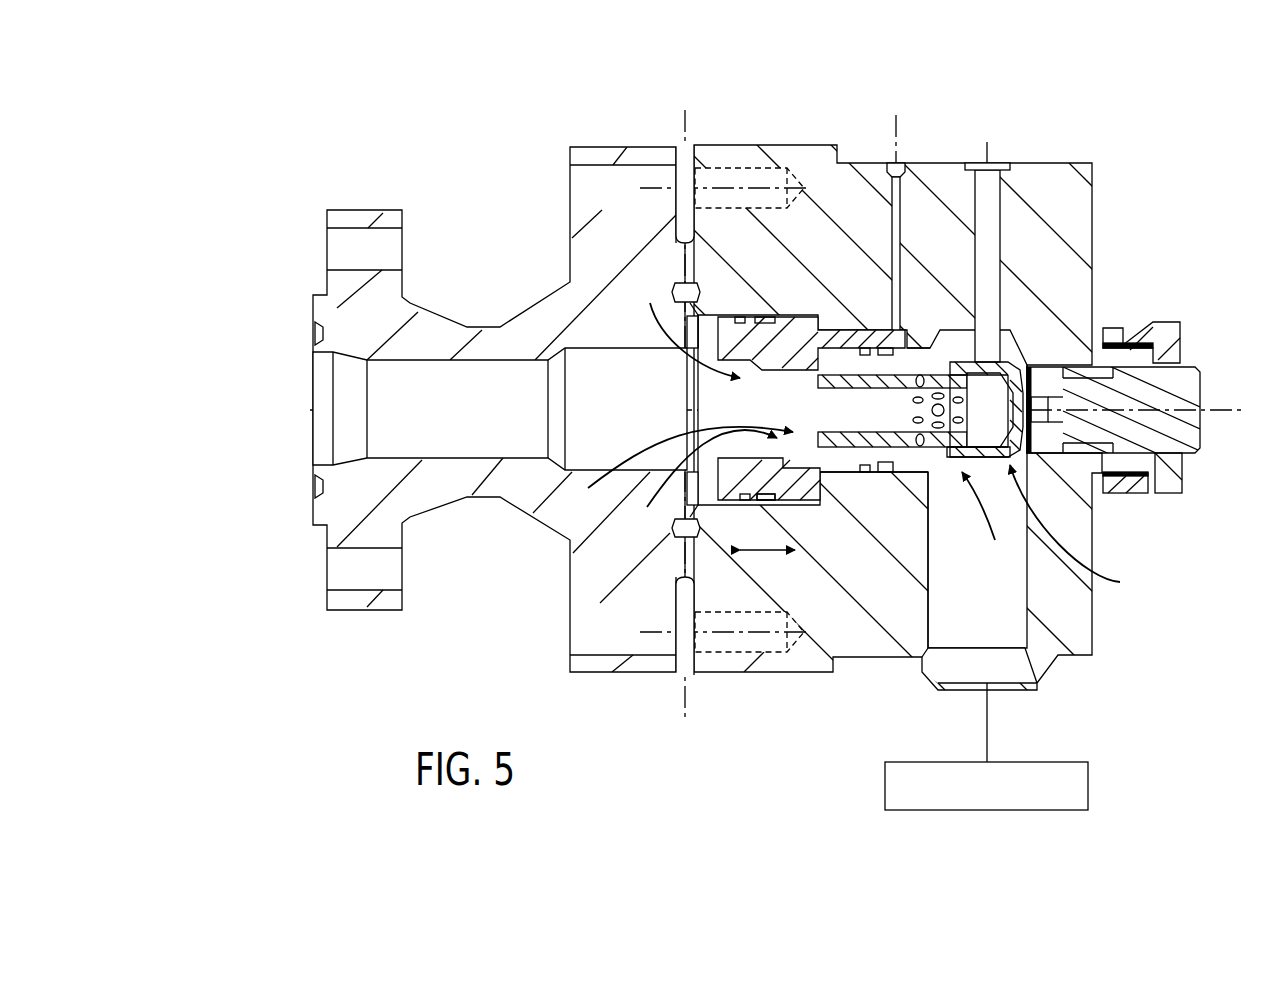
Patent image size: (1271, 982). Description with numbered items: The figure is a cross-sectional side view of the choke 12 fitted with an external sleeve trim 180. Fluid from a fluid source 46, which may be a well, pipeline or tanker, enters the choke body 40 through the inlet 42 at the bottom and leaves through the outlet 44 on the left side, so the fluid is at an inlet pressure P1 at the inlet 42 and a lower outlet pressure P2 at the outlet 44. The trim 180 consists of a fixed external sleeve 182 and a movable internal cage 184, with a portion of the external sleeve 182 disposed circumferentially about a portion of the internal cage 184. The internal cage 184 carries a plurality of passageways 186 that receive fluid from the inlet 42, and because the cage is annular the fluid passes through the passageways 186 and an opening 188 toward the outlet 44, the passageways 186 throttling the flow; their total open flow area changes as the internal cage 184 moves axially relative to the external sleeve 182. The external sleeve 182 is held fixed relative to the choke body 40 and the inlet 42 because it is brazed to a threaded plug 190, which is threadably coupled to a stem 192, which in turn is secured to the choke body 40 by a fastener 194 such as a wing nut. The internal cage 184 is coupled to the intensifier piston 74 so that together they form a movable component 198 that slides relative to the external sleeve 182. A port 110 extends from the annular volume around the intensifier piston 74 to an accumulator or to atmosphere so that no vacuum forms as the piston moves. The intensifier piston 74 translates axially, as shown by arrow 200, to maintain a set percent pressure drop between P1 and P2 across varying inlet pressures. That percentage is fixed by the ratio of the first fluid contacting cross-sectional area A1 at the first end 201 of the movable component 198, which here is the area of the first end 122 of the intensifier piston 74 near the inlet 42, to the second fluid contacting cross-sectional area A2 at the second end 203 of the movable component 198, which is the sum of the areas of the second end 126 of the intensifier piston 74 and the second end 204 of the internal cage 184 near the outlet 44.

The choke 12 is at (617, 95).
The choke body 40 is at (1050, 180).
The inlet 42 is at (1003, 662).
The outlet 44 is at (675, 378).
The fluid source 46 is at (1088, 790).
The intensifier piston 74 is at (767, 490).
The port 110 is at (899, 211).
The first end of the intensifier piston 122 is at (923, 457).
The second end of the intensifier piston 126 is at (719, 538).
The external sleeve trim 180 is at (1012, 469).
The external sleeve 182 is at (980, 368).
The internal cage 184 is at (870, 472).
The passageways 186 is at (940, 390).
The opening 188 is at (896, 415).
The threaded plug 190 is at (1042, 400).
The stem 192 is at (1155, 432).
The fastener 194 is at (1172, 488).
The movable component 198 is at (700, 483).
The arrow 200 is at (773, 557).
The first end of the movable component 201 is at (912, 358).
The second end of the movable component 203 is at (678, 475).
The second end of the internal cage 204 is at (812, 437).
The first fluid contacting cross-sectional area A1 is at (1081, 533).
The second fluid contacting cross-sectional area A2 is at (686, 326).
The inlet pressure P1 is at (976, 506).
The outlet pressure P2 is at (706, 356).